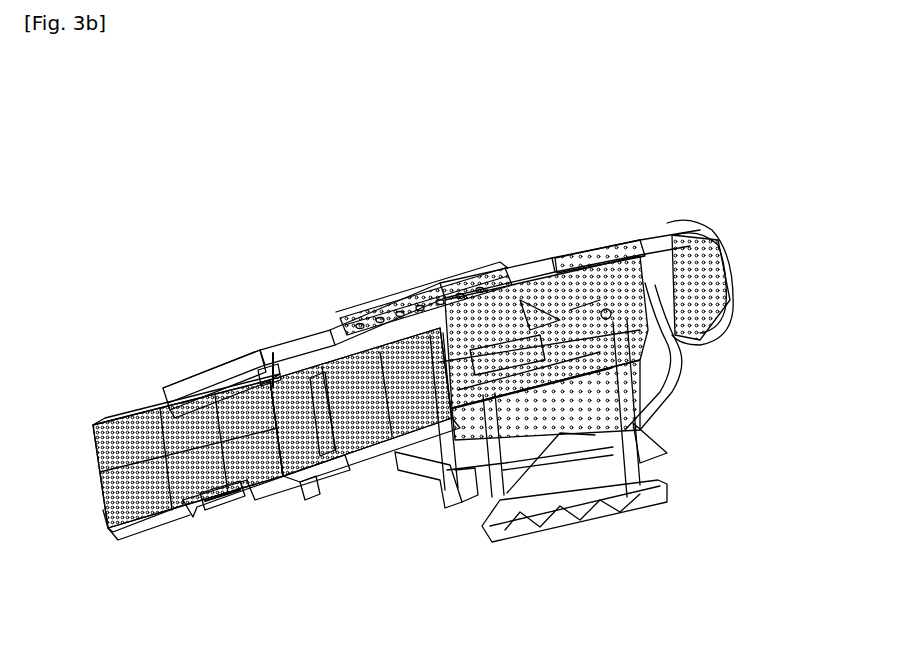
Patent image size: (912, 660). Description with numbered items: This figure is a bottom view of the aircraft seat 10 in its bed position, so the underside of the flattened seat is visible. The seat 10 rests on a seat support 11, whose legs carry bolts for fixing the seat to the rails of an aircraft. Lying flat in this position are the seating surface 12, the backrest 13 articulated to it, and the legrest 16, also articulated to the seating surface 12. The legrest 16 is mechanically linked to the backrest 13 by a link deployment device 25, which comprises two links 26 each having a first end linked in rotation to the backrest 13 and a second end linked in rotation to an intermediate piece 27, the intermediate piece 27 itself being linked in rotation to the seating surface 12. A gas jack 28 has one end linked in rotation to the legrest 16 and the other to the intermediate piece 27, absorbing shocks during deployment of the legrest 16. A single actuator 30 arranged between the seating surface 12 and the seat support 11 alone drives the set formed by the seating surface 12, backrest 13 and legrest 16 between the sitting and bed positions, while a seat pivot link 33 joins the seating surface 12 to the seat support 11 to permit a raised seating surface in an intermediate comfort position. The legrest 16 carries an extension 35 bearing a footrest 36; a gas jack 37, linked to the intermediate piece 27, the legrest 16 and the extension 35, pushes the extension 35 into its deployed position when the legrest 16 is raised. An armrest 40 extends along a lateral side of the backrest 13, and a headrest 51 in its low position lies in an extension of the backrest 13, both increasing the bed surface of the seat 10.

The seat 10 is at (627, 187).
The seat support 11 is at (598, 503).
The seating surface 12 is at (326, 352).
The backrest 13 is at (553, 273).
The legrest 16 is at (197, 383).
The link deployment device 25 is at (268, 363).
The link 26 is at (318, 388).
The intermediate piece 27 is at (272, 502).
The gas jack 28 is at (236, 503).
The single actuator 30 is at (632, 405).
The seat pivot link 33 is at (390, 480).
The extension 35 is at (127, 515).
The footrest 36 is at (112, 420).
The gas jack 37 is at (190, 510).
The armrest 40 is at (409, 282).
The headrest 51 is at (703, 224).